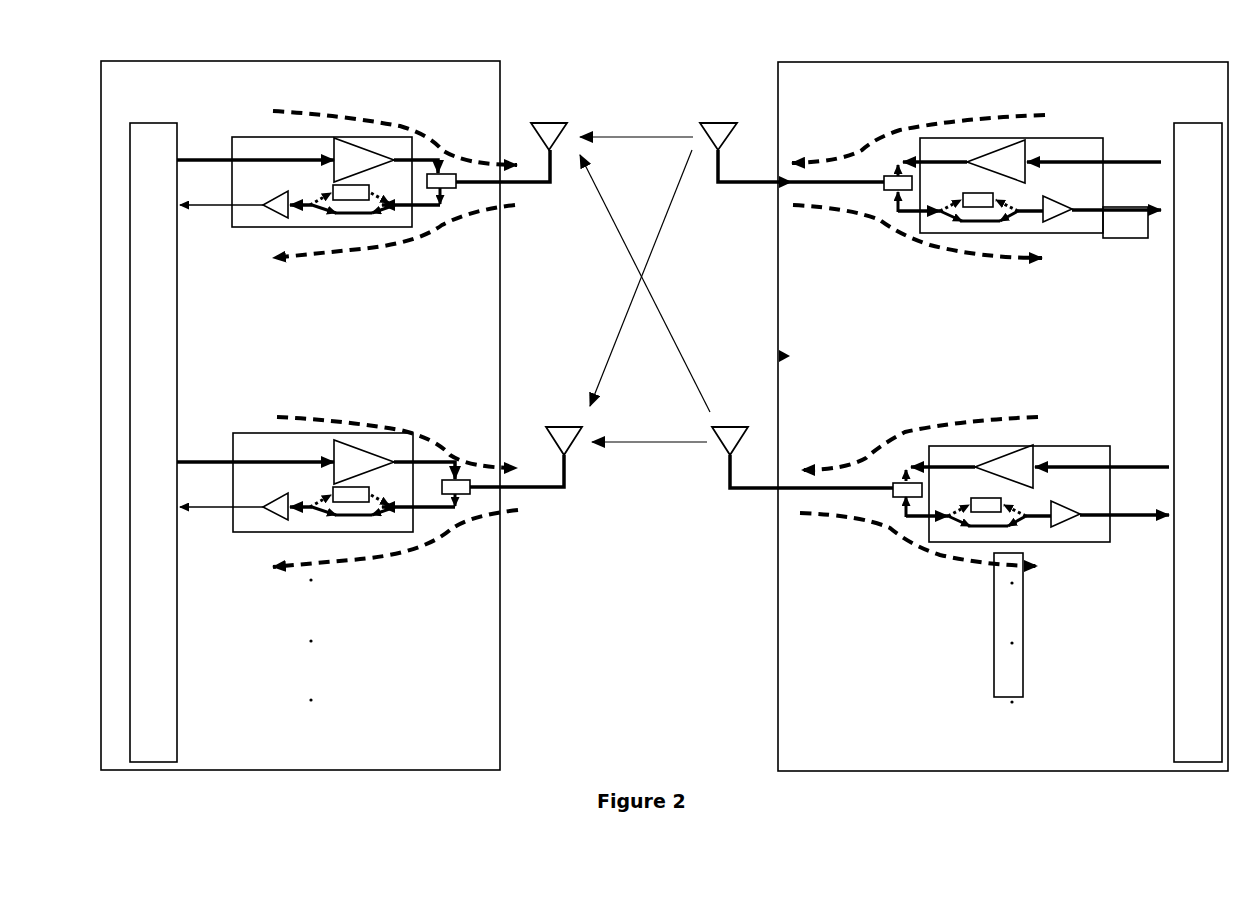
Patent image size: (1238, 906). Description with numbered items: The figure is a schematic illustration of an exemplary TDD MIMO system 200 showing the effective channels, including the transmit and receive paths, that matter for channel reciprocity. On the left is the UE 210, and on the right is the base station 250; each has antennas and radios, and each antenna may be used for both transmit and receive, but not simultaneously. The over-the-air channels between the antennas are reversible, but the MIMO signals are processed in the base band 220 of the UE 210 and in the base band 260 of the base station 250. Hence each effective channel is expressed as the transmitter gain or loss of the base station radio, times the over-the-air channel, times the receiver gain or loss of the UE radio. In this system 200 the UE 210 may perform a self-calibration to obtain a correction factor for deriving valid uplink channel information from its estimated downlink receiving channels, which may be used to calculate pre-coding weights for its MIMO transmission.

The TDD MIMO system 200 is at (661, 84).
The UE 210 is at (409, 52).
The base band 220 is at (176, 107).
The base station 250 is at (1081, 52).
The base band 260 is at (1193, 116).